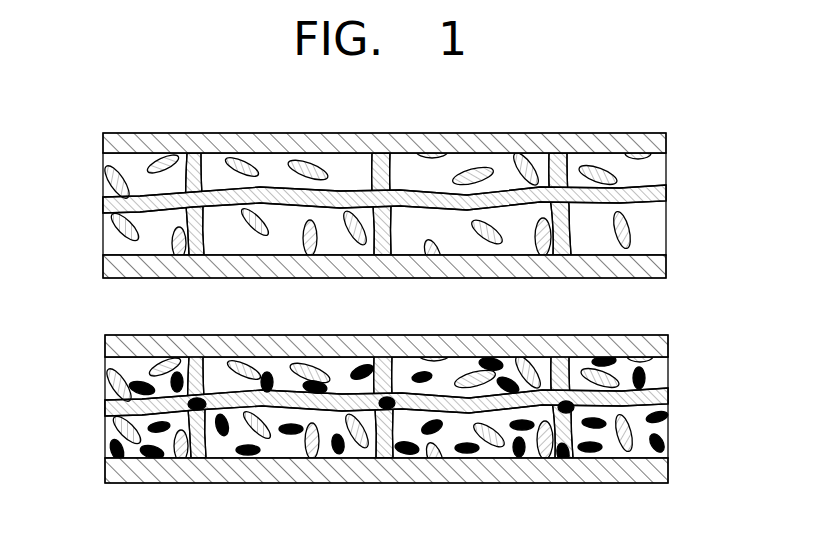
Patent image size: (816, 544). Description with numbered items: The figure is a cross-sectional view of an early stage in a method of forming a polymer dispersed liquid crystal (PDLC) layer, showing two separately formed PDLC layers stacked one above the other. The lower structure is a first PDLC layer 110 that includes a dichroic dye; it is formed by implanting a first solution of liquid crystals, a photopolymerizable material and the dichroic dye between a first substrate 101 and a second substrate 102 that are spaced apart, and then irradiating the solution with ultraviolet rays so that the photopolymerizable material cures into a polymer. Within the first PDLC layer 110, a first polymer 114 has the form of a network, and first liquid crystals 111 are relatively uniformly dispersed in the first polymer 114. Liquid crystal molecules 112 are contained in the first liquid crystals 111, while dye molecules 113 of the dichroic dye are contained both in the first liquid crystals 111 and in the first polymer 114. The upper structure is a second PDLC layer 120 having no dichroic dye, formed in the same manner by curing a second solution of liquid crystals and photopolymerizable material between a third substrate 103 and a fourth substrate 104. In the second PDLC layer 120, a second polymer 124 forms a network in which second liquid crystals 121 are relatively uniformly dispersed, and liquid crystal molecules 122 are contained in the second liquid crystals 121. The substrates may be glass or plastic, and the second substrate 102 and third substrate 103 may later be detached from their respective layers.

The first substrate 101 is at (669, 472).
The second substrate 102 is at (669, 346).
The third substrate 103 is at (667, 267).
The fourth substrate 104 is at (667, 143).
The first PDLC layer 110 is at (89, 359).
The first liquid crystals 111 is at (674, 419).
The liquid crystal molecules 112 is at (622, 450).
The dye molecules 113 is at (668, 448).
The first polymer 114 is at (668, 395).
The second PDLC layer 120 is at (87, 156).
The second liquid crystals 121 is at (642, 235).
The liquid crystal molecules 122 is at (635, 215).
The second polymer 124 is at (663, 190).